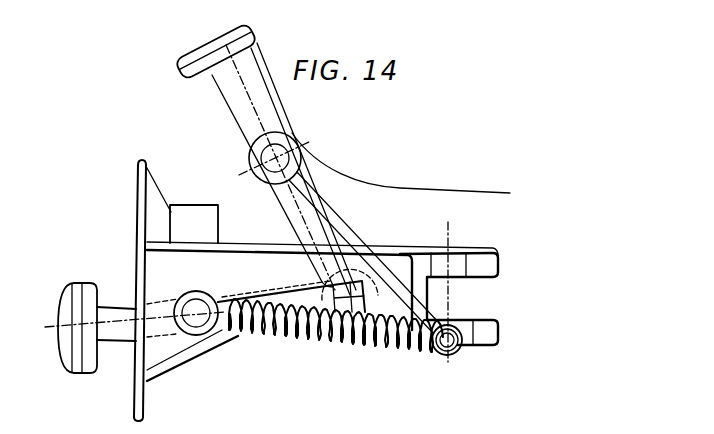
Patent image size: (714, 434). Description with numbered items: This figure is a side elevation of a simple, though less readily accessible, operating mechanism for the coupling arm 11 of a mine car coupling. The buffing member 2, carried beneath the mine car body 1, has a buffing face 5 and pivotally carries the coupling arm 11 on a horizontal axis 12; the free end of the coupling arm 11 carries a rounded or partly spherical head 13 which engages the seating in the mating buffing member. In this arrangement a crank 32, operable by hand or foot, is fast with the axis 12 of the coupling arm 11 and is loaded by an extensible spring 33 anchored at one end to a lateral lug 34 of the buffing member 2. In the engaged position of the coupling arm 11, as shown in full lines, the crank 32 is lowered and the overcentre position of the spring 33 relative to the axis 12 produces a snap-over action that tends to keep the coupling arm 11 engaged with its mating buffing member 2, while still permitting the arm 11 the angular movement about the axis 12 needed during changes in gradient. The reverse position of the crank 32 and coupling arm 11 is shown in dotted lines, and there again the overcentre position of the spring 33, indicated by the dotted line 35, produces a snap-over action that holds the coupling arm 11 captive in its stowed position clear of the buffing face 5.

The mine car body 1 is at (354, 172).
The buffing member 2 is at (245, 243).
The buffing face 5 is at (137, 187).
The coupling arm 11 is at (238, 128).
The horizontal axis 12 is at (440, 248).
The rounded head 13 is at (200, 76).
The crank 32 is at (302, 134).
The extensible spring 33 is at (338, 346).
The lateral lug 34 is at (462, 345).
The dotted line 35 is at (350, 236).